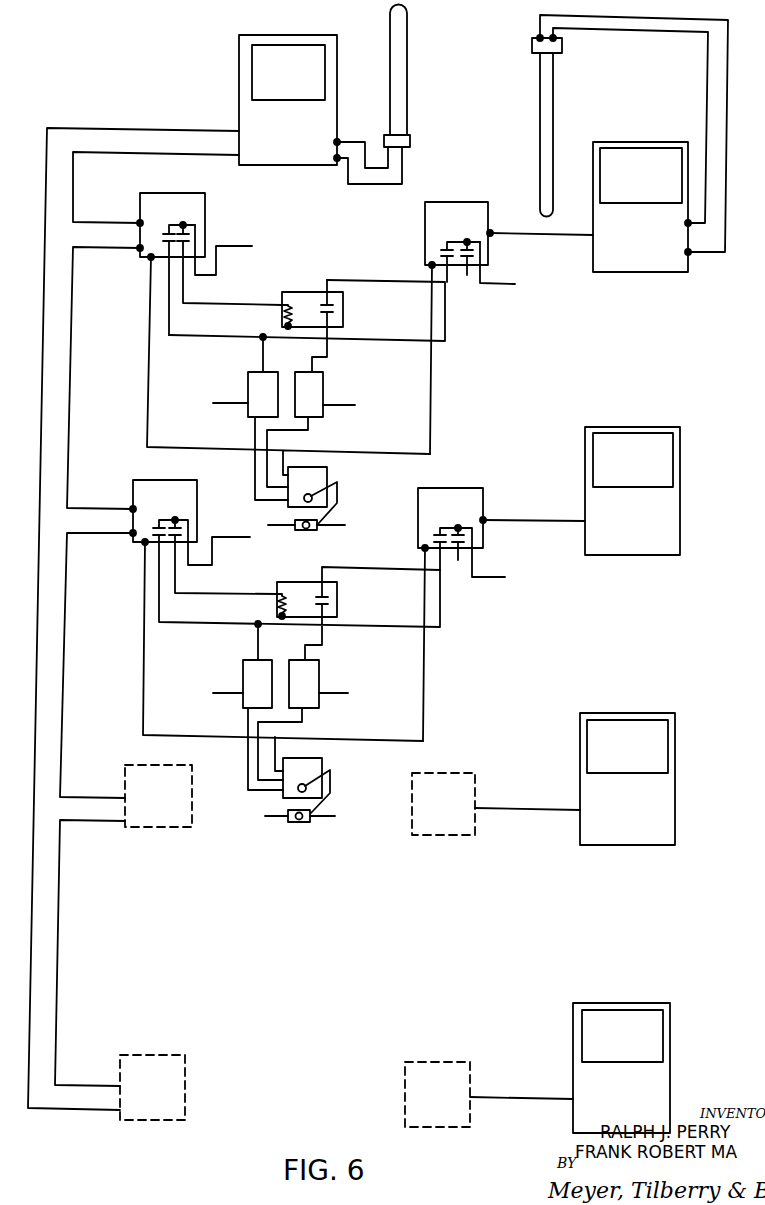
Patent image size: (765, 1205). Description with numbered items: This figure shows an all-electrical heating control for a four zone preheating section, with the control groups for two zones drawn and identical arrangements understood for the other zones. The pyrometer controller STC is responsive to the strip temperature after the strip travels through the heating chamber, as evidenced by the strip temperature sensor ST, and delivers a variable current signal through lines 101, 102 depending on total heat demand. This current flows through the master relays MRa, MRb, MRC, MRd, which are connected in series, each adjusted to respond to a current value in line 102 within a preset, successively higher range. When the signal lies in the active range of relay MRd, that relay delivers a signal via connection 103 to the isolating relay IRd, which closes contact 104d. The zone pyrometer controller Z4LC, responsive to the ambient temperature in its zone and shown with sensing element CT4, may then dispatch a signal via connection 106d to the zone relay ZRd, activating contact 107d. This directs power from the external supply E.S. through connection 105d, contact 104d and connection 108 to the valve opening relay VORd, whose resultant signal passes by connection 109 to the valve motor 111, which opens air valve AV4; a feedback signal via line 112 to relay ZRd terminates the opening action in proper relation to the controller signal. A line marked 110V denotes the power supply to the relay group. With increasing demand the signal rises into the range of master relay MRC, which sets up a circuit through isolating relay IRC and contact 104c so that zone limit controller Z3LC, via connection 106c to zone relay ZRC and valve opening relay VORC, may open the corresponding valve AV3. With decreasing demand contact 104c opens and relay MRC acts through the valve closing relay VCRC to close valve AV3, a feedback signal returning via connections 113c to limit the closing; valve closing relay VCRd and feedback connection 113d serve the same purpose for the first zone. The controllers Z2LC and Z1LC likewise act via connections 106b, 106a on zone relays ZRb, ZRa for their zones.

The signal line 101 is at (172, 128).
The signal line 102 is at (172, 153).
The connection 103 is at (215, 305).
The contact 104d is at (343, 310).
The contact 104c is at (337, 601).
The connection 105d is at (398, 281).
The connection 106d is at (535, 236).
The connection 106c is at (563, 521).
The connection 106b is at (517, 811).
The connection 106a is at (548, 1100).
The contact 107d is at (467, 275).
The connection 108 is at (328, 354).
The connection 109 is at (297, 433).
The 110 volt supply line 110V is at (228, 248).
The valve motor 111 is at (327, 471).
The feedback line 112 is at (431, 388).
The feedback connection 113d is at (214, 448).
The feedback connections 113c is at (178, 736).
The pyrometer controller STC is at (302, 138).
The strip temperature sensor ST is at (405, 83).
The zone temperature sensing element CT4 is at (553, 107).
The zone pyrometer controller Z4LC is at (658, 250).
The zone limit controller Z3LC is at (655, 547).
The zone pyrometer controller Z2LC is at (648, 832).
The zone pyrometer controller Z1LC is at (637, 1110).
The master relay MRd is at (207, 202).
The master relay MRC is at (182, 480).
The master relay MRb is at (192, 807).
The master relay MRa is at (185, 1088).
The zone relay ZRd is at (448, 202).
The zone relay ZRC is at (486, 490).
The zone relay ZRb is at (476, 797).
The zone relay ZRa is at (470, 1082).
The isolating relay IRd is at (300, 290).
The isolating relay IRC is at (297, 582).
The valve closing relay VCRd is at (248, 383).
The valve opening relay VORd is at (323, 390).
The valve closing relay VCRC is at (243, 673).
The valve opening relay VORC is at (319, 677).
The air valve AV4 is at (297, 531).
The air valve AV3 is at (305, 823).
The external supply E.S. is at (515, 275).